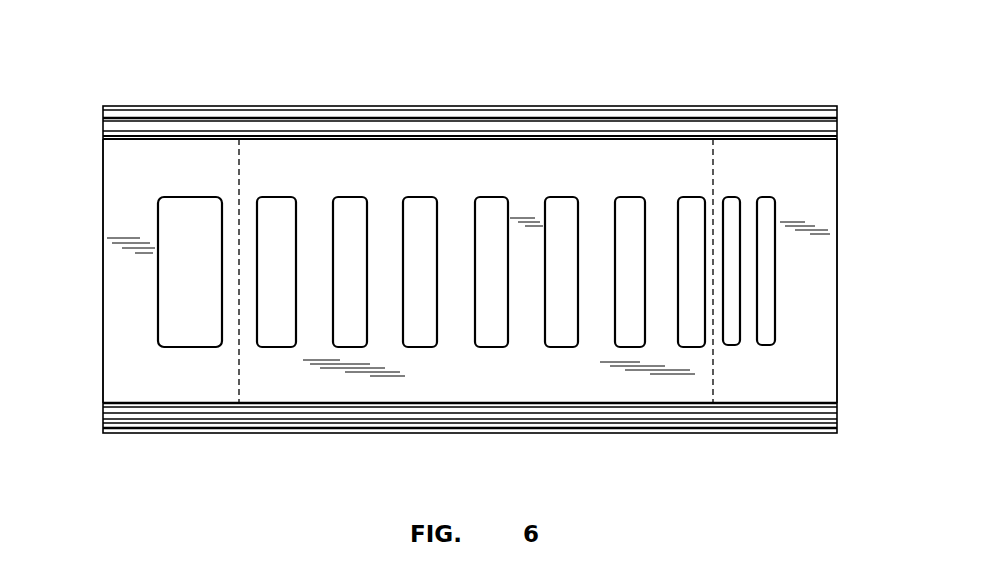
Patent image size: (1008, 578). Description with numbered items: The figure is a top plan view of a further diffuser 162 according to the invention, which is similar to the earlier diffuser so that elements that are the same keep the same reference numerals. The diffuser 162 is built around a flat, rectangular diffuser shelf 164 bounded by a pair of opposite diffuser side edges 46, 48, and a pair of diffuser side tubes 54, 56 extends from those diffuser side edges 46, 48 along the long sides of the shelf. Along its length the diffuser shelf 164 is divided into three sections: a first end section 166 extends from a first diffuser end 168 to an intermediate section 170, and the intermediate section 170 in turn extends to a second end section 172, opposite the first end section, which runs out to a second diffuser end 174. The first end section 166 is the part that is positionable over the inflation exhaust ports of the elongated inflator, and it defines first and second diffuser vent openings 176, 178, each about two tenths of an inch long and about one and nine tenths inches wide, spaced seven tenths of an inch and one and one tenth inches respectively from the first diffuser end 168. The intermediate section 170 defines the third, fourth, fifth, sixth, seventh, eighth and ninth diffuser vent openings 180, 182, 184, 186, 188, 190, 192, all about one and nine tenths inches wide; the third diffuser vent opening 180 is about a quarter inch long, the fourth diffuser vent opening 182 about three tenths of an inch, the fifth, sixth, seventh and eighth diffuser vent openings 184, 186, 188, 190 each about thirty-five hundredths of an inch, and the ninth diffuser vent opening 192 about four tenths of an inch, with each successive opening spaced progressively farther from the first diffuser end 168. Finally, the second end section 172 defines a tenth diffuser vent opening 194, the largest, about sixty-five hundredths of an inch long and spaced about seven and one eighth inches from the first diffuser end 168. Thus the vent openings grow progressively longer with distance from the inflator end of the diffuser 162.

The diffuser side edge 46 is at (295, 396).
The diffuser side edge 48 is at (324, 141).
The diffuser side tube 54 is at (320, 429).
The diffuser side tube 56 is at (413, 107).
The diffuser 162 is at (626, 450).
The diffuser shelf 164 is at (487, 379).
The first end section 166 is at (751, 397).
The first diffuser end 168 is at (838, 362).
The intermediate section 170 is at (413, 383).
The second end section 172 is at (189, 396).
The second diffuser end 174 is at (103, 359).
The first diffuser vent opening 176 is at (766, 346).
The second diffuser vent opening 178 is at (728, 197).
The third diffuser vent opening 180 is at (692, 198).
The fourth diffuser vent opening 182 is at (629, 198).
The fifth diffuser vent opening 184 is at (563, 198).
The sixth diffuser vent opening 186 is at (491, 198).
The seventh diffuser vent opening 188 is at (421, 198).
The eighth diffuser vent opening 190 is at (348, 198).
The ninth diffuser vent opening 192 is at (279, 198).
The tenth diffuser vent opening 194 is at (157, 222).